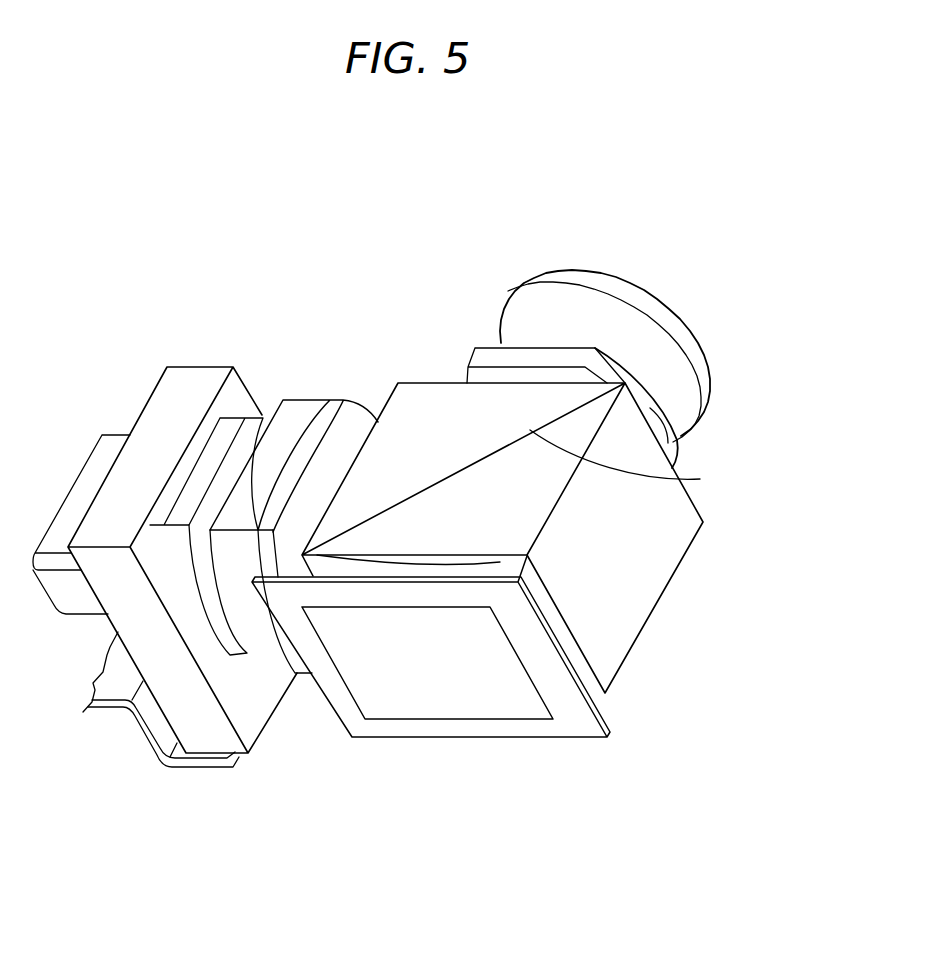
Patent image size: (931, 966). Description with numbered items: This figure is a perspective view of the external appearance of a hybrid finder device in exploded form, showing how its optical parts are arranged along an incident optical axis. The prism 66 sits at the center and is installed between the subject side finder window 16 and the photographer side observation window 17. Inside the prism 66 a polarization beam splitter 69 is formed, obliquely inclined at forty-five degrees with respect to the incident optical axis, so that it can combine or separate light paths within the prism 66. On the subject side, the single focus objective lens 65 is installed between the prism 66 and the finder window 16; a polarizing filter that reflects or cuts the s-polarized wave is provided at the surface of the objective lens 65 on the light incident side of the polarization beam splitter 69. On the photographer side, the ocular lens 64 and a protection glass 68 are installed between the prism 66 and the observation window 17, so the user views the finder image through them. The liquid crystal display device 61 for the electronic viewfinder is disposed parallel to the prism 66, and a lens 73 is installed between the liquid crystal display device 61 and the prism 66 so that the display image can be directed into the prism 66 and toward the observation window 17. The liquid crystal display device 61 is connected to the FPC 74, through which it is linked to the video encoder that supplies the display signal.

The subject side finder window 16 is at (503, 707).
The photographer side observation window 17 is at (648, 337).
The liquid crystal display device 61 is at (200, 378).
The ocular lens 64 is at (490, 375).
The objective lens 65 is at (585, 672).
The prism 66 is at (645, 604).
The protection glass 68 is at (657, 415).
The polarization beam splitter 69 is at (700, 479).
The lens 73 is at (302, 402).
The FPC 74 is at (113, 687).